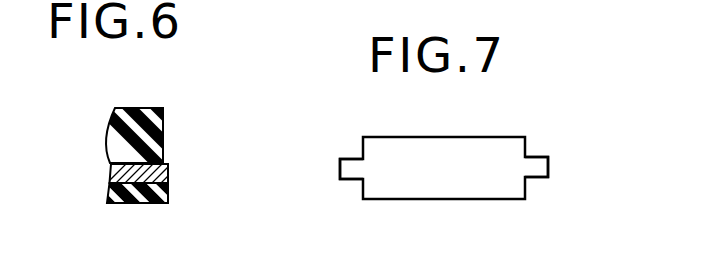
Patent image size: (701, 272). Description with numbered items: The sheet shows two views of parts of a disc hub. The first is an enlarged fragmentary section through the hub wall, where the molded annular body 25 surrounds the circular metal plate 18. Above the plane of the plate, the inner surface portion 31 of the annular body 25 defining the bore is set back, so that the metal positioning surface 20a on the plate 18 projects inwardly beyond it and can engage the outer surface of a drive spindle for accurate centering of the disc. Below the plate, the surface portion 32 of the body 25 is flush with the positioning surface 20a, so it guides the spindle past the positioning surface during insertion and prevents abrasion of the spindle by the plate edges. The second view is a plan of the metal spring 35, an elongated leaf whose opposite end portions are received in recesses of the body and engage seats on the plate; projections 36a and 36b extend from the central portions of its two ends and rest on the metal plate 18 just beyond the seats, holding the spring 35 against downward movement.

In FIG. 6, the annular body 25 is at (135, 118).
In FIG. 6, the surface portion 31 is at (163, 136).
In FIG. 6, the metal plate 18 is at (118, 173).
In FIG. 6, the positioning surface 20a is at (168, 172).
In FIG. 6, the surface portion 32 is at (168, 188).
In FIG. 7, the metal spring 35 is at (450, 186).
In FIG. 7, the projection 36a is at (358, 163).
In FIG. 7, the projection 36b is at (538, 165).